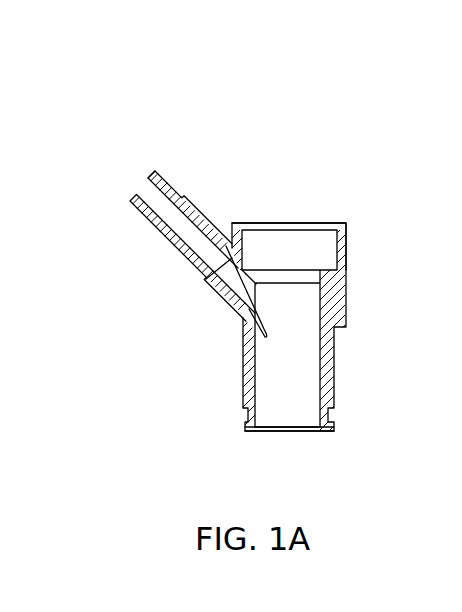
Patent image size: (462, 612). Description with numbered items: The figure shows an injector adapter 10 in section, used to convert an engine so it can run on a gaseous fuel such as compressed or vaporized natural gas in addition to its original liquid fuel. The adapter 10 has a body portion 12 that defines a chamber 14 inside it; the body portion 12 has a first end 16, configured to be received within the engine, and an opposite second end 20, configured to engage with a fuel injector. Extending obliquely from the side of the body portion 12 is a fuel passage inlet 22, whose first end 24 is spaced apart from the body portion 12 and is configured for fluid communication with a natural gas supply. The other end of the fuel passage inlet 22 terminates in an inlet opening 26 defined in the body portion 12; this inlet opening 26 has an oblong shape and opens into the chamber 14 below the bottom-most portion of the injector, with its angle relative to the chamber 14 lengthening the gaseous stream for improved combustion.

The injector adapter 10 is at (90, 465).
The body portion 12 is at (243, 403).
The chamber 14 is at (250, 427).
The first end 16 is at (283, 437).
The second end 20 is at (334, 264).
The fuel passage inlet 22 is at (170, 253).
The first end 24 is at (147, 176).
The inlet opening 26 is at (256, 310).